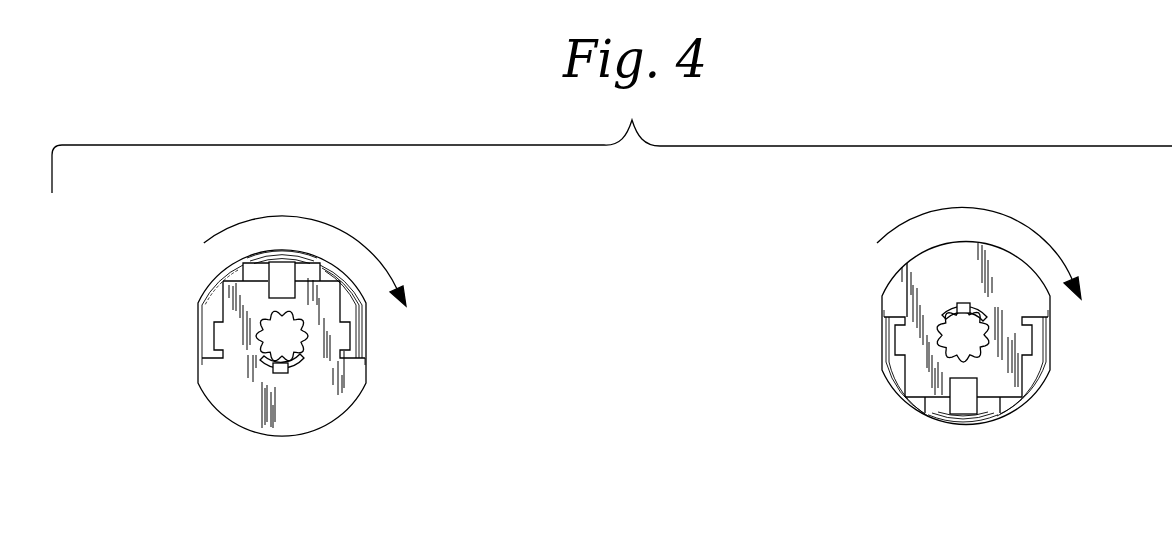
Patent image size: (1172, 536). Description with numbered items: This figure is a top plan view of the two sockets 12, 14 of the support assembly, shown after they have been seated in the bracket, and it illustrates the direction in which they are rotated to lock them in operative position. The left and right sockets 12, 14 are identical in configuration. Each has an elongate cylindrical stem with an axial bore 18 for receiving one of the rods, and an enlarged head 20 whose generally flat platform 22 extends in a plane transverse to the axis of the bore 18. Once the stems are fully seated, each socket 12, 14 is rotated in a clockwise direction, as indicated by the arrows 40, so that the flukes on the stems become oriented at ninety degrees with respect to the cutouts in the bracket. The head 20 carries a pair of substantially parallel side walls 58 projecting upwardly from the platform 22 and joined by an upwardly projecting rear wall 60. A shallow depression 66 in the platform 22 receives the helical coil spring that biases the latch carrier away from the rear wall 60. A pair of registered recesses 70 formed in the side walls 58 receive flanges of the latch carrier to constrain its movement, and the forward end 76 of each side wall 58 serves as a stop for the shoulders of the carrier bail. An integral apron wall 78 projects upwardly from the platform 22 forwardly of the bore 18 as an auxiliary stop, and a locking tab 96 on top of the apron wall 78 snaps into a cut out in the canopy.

The socket 12 is at (140, 262).
The socket 14 is at (846, 259).
The axial bore 18 is at (292, 338).
The enlarged head 20 is at (160, 395).
The platform 22 is at (317, 413).
The arrows 40 is at (307, 216).
The side walls 58 is at (197, 312).
The rear wall 60 is at (310, 263).
The shallow depression 66 is at (275, 267).
The registered recesses 70 is at (210, 335).
The forward end 76 is at (213, 373).
The apron wall 78 is at (272, 377).
The locking tab 96 is at (283, 377).